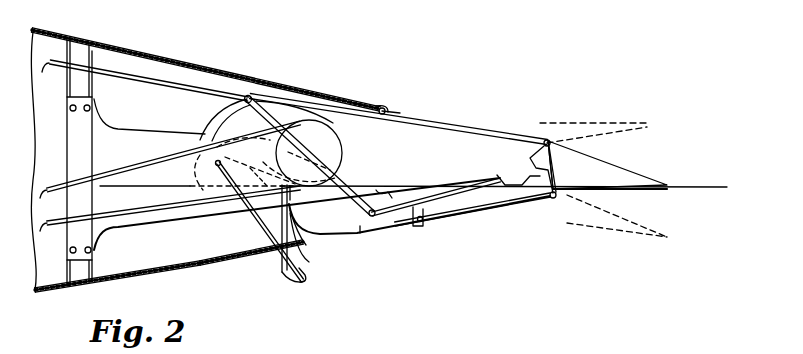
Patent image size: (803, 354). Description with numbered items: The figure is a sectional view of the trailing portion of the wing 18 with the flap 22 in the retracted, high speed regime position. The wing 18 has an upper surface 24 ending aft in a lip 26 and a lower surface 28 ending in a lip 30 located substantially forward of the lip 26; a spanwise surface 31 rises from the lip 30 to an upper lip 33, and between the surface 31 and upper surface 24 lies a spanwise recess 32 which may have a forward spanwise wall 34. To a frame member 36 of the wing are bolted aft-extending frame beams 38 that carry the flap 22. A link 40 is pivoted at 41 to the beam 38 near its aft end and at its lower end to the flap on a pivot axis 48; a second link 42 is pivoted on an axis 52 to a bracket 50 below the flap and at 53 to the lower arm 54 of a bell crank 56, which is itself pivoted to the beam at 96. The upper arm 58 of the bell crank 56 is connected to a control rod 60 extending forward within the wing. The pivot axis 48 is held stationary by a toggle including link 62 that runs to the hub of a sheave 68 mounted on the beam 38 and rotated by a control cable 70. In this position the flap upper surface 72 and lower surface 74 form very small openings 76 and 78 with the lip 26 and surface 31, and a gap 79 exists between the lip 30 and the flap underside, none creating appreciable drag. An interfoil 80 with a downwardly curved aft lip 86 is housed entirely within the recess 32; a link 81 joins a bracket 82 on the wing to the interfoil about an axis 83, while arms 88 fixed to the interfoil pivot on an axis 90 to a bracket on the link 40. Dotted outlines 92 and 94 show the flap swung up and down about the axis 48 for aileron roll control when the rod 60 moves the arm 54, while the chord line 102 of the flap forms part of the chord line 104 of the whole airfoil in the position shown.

The wing 18 is at (236, 75).
The flap 22 is at (458, 123).
The upper surface 24 is at (258, 80).
The lip 26 is at (383, 108).
The lower surface 28 is at (203, 267).
The lip 30 is at (306, 278).
The spanwise surface 31 is at (268, 238).
The spanwise recess 32 is at (195, 167).
The upper lip 33 is at (272, 162).
The forward spanwise wall 34 is at (190, 190).
The frame member 36 is at (84, 60).
The frame beam 38 is at (148, 140).
The link 40 is at (413, 190).
The pivot 41 is at (507, 180).
The link 42 is at (500, 208).
The pivot axis 48 is at (360, 228).
The bracket 50 is at (413, 214).
The axis 52 is at (423, 224).
The pivot 53 is at (555, 198).
The lower arm 54 is at (553, 181).
The bell crank 56 is at (548, 166).
The upper arm 58 is at (548, 145).
The control rod 60 is at (133, 78).
The toggle link 62 is at (367, 213).
The sheave 68 is at (333, 147).
The control cable 70 is at (105, 172).
The upper surface 72 is at (430, 117).
The lower surface 74 is at (347, 248).
The opening 76 is at (400, 113).
The opening 78 is at (310, 261).
The gap 79 is at (307, 244).
The interfoil 80 is at (233, 121).
The link 81 is at (247, 228).
The bracket 82 is at (278, 268).
The axis 83 is at (222, 160).
The aft lip 86 is at (326, 127).
The arm 88 is at (338, 165).
The axis 90 is at (380, 192).
The aileron position 92 is at (653, 115).
The aileron position 94 is at (657, 226).
The pivot 96 is at (527, 155).
The chord line 102 is at (692, 187).
The chord line 104 is at (157, 186).